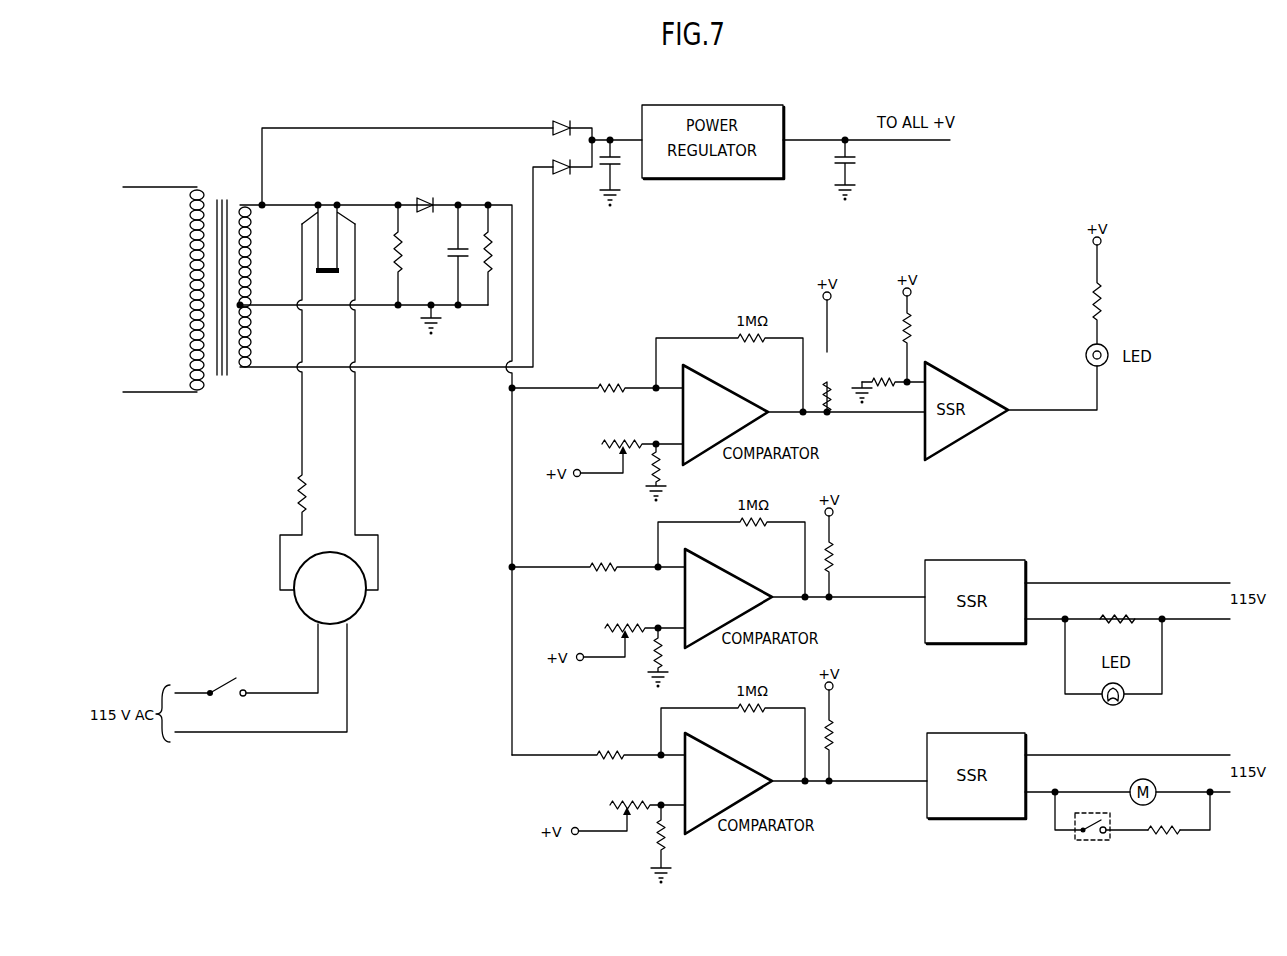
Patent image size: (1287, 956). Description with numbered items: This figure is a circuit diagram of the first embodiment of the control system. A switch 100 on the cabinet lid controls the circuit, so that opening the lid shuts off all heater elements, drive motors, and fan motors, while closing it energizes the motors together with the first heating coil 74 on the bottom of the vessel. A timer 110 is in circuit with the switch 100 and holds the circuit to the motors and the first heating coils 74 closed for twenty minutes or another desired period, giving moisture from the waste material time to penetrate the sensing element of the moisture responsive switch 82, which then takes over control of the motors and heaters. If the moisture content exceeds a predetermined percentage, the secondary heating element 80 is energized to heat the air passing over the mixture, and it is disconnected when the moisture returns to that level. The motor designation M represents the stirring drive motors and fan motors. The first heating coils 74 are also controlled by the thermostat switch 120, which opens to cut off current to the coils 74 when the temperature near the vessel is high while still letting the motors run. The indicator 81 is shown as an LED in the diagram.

The moisture responsive switch 82 is at (339, 273).
The LED indicator 81 is at (1088, 362).
The secondary heating element 80 is at (1115, 613).
The first heating coil 74 is at (1163, 834).
The thermostat switch 120 is at (1089, 843).
The timer 110 is at (357, 609).
The switch 100 is at (228, 685).